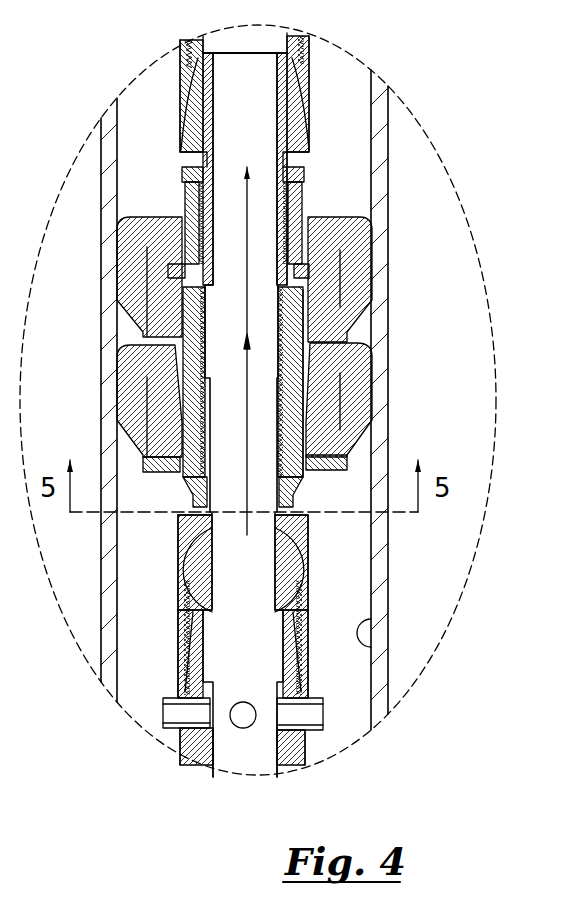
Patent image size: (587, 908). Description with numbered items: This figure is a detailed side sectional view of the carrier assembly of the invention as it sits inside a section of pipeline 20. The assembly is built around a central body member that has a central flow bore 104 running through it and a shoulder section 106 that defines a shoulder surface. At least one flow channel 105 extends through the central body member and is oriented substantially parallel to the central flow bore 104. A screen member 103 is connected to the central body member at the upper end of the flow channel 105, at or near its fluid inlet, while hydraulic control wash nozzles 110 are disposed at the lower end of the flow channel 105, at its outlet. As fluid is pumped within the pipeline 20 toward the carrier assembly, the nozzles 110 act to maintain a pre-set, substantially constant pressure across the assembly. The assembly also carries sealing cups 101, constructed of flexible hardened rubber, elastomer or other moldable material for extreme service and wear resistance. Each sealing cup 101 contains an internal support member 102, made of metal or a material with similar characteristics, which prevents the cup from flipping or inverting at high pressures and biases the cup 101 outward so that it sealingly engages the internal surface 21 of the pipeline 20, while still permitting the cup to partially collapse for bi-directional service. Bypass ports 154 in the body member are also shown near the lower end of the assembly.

The pipeline 20 is at (382, 125).
The internal surface of pipeline 21 is at (371, 647).
The sealing cup 101 is at (358, 240).
The internal support member 102 is at (298, 368).
The screen member 103 is at (181, 221).
The central flow bore 104 is at (182, 278).
The flow channel 105 is at (295, 362).
The shoulder section 106 is at (160, 484).
The hydraulic control wash nozzle 110 is at (177, 490).
The bypass ports 154 is at (168, 717).